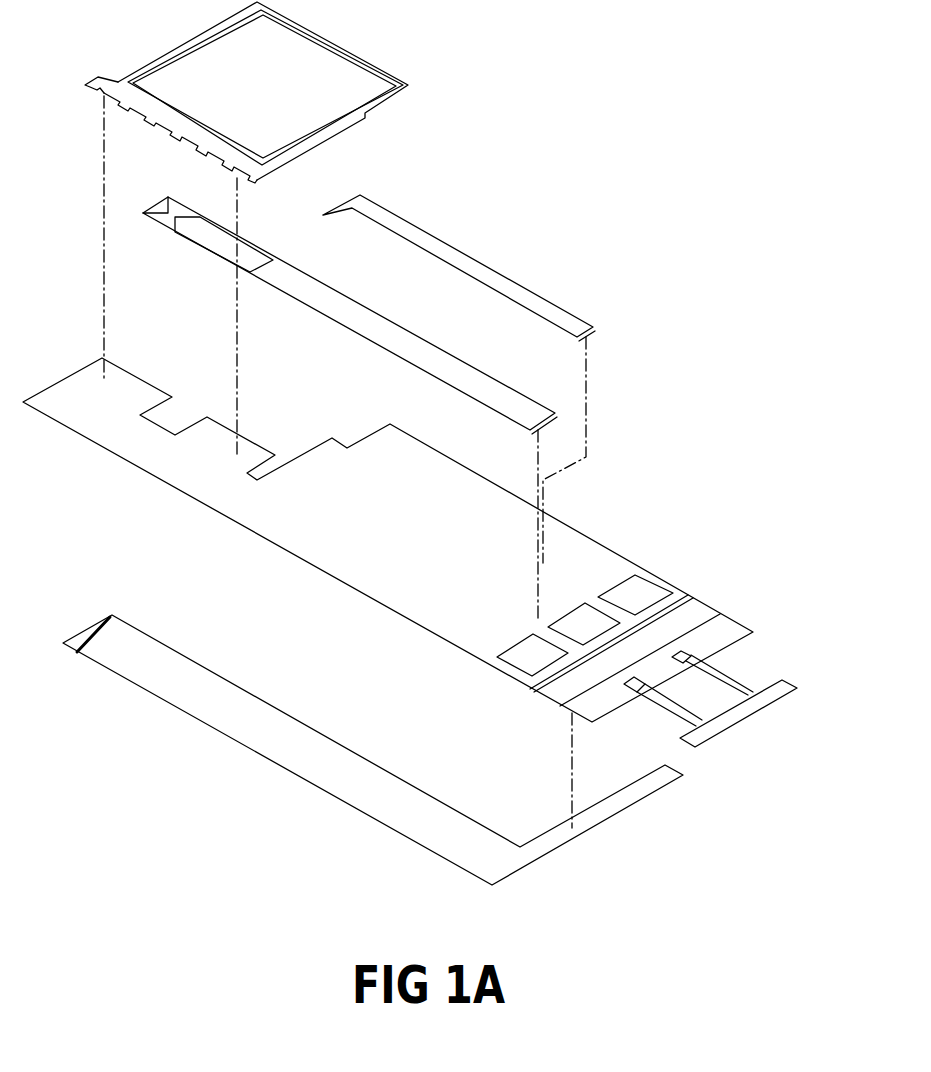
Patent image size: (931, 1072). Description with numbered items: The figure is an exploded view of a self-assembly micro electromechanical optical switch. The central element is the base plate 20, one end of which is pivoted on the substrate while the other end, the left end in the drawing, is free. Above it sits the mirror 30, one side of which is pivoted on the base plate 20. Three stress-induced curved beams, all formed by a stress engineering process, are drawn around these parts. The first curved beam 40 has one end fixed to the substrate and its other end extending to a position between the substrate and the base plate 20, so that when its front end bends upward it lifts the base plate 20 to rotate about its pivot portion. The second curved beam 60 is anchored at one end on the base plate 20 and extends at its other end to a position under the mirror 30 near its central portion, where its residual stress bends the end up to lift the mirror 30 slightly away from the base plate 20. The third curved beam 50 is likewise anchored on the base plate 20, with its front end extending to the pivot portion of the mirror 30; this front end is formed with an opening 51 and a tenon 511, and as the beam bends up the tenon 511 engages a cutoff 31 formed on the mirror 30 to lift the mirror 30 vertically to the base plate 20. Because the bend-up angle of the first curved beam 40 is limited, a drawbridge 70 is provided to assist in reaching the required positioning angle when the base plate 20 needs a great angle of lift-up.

The base plate 20 is at (602, 553).
The mirror 30 is at (362, 53).
The cutoff 31 is at (160, 142).
The first curved beam 40 is at (462, 258).
The third curved beam 50 is at (403, 353).
The opening 51 is at (218, 240).
The tenon 511 is at (163, 223).
The second curved beam 60 is at (277, 753).
The drawbridge 70 is at (665, 708).